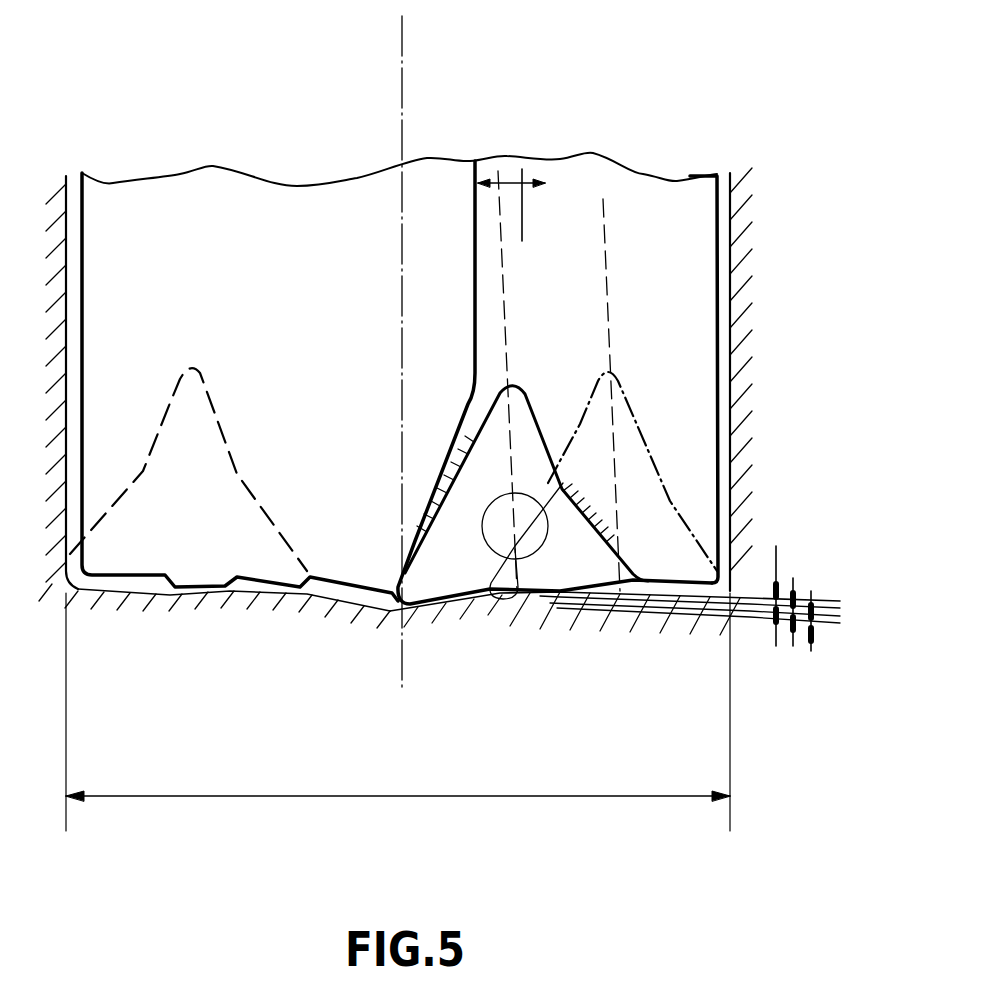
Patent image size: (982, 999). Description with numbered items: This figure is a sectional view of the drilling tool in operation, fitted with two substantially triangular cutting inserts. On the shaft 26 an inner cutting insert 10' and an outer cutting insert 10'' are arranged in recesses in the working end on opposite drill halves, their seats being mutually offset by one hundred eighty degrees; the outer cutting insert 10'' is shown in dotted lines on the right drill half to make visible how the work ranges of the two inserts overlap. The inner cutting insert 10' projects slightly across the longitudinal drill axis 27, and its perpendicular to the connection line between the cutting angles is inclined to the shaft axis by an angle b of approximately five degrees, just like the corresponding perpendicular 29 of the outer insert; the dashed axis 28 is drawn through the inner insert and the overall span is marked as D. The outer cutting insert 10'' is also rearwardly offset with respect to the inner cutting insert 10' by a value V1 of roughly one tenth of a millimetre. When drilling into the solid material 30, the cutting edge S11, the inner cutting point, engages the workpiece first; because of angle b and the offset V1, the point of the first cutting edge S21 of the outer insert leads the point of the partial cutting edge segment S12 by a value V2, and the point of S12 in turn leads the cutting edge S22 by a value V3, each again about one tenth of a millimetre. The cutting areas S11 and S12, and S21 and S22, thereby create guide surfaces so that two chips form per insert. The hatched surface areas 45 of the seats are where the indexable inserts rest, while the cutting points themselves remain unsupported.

The shaft 26 is at (213, 190).
The longitudinal drill axis 27 is at (403, 42).
The tooth axis 28 is at (506, 296).
The perpendicular 29 is at (600, 202).
The solid material 30 is at (730, 190).
The surface areas of the seats 45 is at (567, 488).
The inner cutting insert 10' is at (526, 464).
The outer cutting insert 10'' is at (188, 452).
The cutting edge S11 is at (473, 598).
The first cutting edge S21 is at (546, 597).
The partial cutting edge segment S12 is at (595, 600).
The cutting edge S22 is at (658, 600).
The value V1 is at (814, 616).
The value V2 is at (796, 600).
The value V3 is at (780, 596).
The angle b is at (508, 174).
The diameter D is at (385, 798).